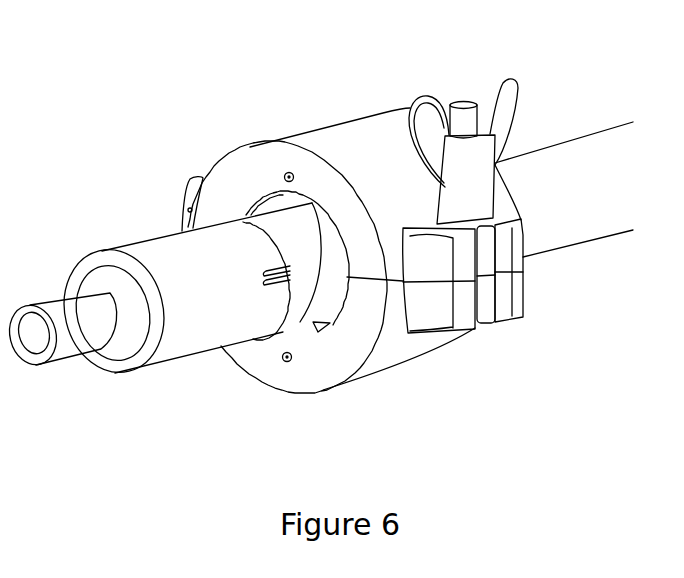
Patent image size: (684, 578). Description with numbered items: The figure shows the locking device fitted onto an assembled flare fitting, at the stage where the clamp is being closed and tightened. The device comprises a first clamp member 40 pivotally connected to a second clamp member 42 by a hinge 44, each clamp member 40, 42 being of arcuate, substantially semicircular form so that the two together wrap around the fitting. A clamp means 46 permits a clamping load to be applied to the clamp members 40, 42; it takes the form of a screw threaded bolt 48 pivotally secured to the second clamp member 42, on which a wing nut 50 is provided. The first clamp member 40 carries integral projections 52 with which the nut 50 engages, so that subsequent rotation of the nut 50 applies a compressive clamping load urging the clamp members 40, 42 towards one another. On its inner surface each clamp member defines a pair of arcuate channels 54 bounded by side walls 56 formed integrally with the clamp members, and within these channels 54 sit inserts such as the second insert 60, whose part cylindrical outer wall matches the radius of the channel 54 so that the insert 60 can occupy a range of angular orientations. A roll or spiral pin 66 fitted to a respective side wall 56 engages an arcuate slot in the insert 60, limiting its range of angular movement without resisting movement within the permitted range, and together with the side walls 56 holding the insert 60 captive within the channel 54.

The first clamp member 40 is at (252, 160).
The second clamp member 42 is at (317, 383).
The hinge 44 is at (166, 206).
The clamp means 46 is at (454, 84).
The screw threaded bolt 48 is at (465, 117).
The wing nut 50 is at (512, 98).
The integral projections 52 is at (517, 250).
The arcuate channels 54 is at (305, 345).
The side walls 56 is at (262, 362).
The second insert 60 is at (330, 322).
The roll or spiral pin 66 is at (289, 172).